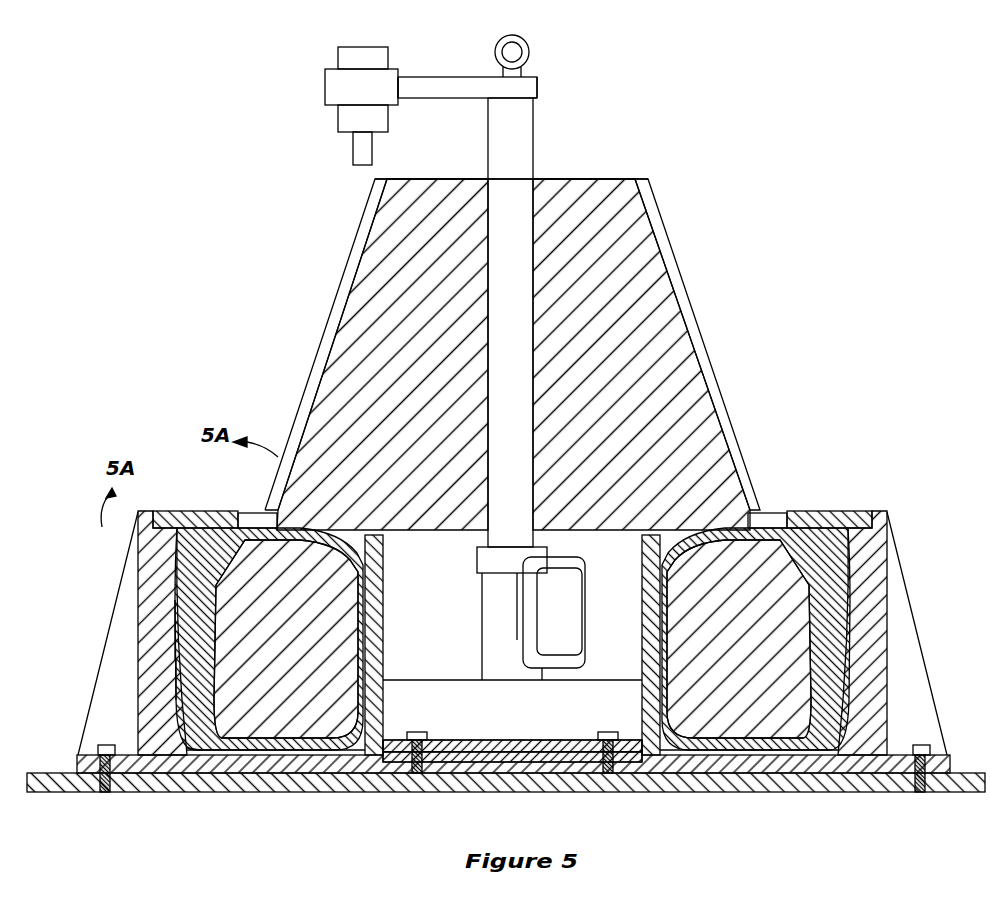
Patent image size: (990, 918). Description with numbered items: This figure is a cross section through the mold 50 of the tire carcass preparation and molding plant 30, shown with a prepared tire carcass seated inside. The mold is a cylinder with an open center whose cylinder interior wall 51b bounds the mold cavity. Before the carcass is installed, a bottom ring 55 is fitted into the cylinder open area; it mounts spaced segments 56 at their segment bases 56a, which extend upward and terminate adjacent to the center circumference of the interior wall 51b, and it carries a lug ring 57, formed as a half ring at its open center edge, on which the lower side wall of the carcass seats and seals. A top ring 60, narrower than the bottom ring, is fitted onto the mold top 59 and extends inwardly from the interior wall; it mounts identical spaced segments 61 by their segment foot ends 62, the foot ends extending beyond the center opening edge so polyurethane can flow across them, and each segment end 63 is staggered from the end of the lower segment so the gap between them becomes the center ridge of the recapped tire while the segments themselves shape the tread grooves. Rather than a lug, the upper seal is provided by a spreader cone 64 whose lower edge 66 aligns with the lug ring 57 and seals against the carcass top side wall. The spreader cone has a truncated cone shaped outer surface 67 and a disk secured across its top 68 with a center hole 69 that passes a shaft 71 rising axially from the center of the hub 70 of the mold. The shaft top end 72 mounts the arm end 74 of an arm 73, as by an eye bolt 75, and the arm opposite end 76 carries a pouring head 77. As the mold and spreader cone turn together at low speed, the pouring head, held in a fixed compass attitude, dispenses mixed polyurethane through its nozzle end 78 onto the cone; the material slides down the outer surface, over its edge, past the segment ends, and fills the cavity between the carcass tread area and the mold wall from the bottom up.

The tire carcass preparation and molding plant 30 is at (285, 775).
The mold 50 is at (857, 470).
The cylinder interior wall 51b is at (173, 608).
The bottom ring 55 is at (210, 755).
The spaced segments 56 is at (178, 743).
The segment bases 56a is at (173, 667).
The lug ring 57 is at (305, 765).
The mold top 59 is at (155, 511).
The top ring 60 is at (232, 511).
The spaced segments 61 is at (140, 588).
The segment foot ends 62 is at (178, 548).
The segment end 63 is at (175, 637).
The spreader cone 64 is at (327, 263).
The lower edge 66 is at (263, 503).
The truncated cone shaped outer surface 67 is at (367, 233).
The spreader cone top 68 is at (608, 179).
The center hole 69 is at (535, 178).
The hub 70 is at (295, 425).
The shaft 71 is at (520, 268).
The shaft top end 72 is at (538, 98).
The arm 73 is at (455, 86).
The arm end 74 is at (540, 82).
The eye bolt 75 is at (530, 53).
The arm opposite end 76 is at (400, 75).
The pouring head 77 is at (335, 85).
The nozzle end 78 is at (360, 148).